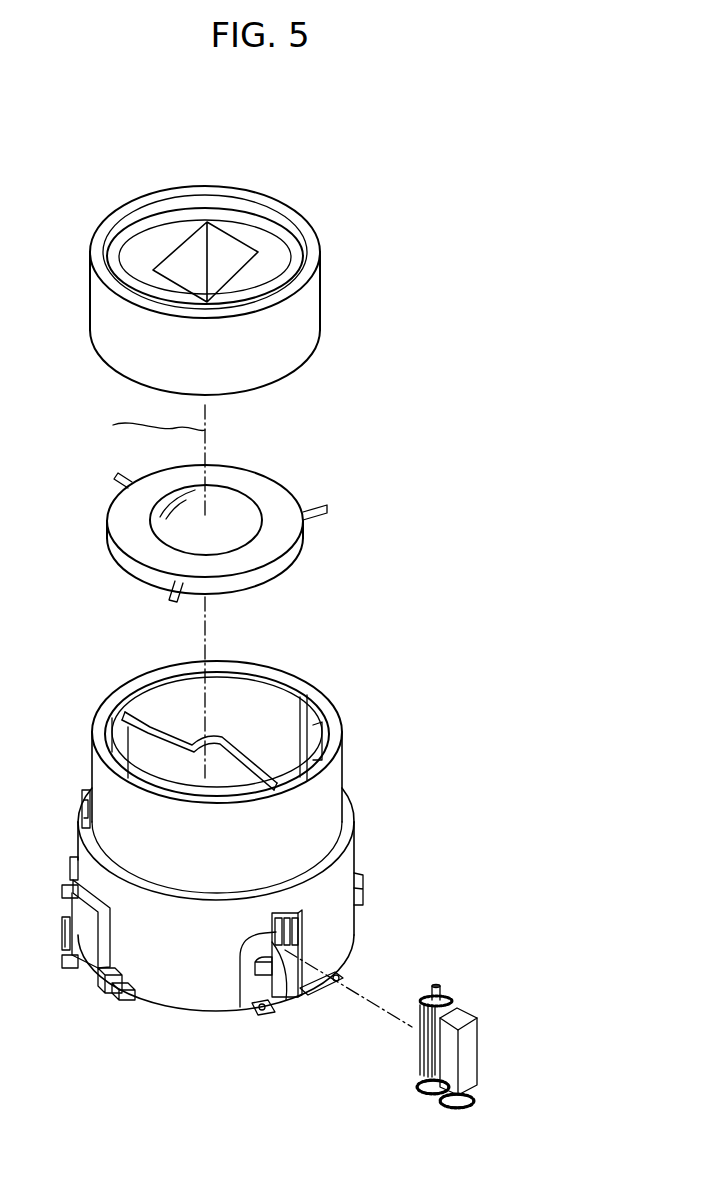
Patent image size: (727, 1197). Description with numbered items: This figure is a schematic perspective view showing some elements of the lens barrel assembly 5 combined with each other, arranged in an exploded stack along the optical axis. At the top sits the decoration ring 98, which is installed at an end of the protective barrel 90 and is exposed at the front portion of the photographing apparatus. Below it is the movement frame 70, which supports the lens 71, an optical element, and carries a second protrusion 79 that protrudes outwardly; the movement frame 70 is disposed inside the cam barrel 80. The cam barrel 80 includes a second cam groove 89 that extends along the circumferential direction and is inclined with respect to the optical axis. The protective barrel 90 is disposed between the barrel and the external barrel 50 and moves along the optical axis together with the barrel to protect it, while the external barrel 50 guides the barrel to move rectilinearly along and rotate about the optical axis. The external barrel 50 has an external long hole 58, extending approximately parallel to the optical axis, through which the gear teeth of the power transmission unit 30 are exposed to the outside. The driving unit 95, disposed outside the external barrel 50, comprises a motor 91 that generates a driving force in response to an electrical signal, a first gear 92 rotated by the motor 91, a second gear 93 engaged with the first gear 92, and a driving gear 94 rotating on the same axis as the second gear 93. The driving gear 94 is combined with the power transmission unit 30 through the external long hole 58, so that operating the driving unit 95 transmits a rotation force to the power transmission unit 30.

The lens barrel assembly 5 is at (46, 194).
The decoration ring 98 is at (310, 239).
The movement frame 70 is at (254, 498).
The lens 71 is at (237, 502).
The second protrusion 79 is at (330, 512).
The cam barrel 80 is at (217, 746).
The second cam groove 89 is at (245, 752).
The protective barrel 90 is at (330, 782).
The external barrel 50 is at (250, 833).
The power transmission unit 30 is at (240, 1007).
The external long hole 58 is at (282, 1000).
The driving unit 95 is at (486, 1045).
The motor 91 is at (468, 1048).
The first gear 92 is at (498, 1112).
The second gear 93 is at (420, 1087).
The driving gear 94 is at (447, 997).